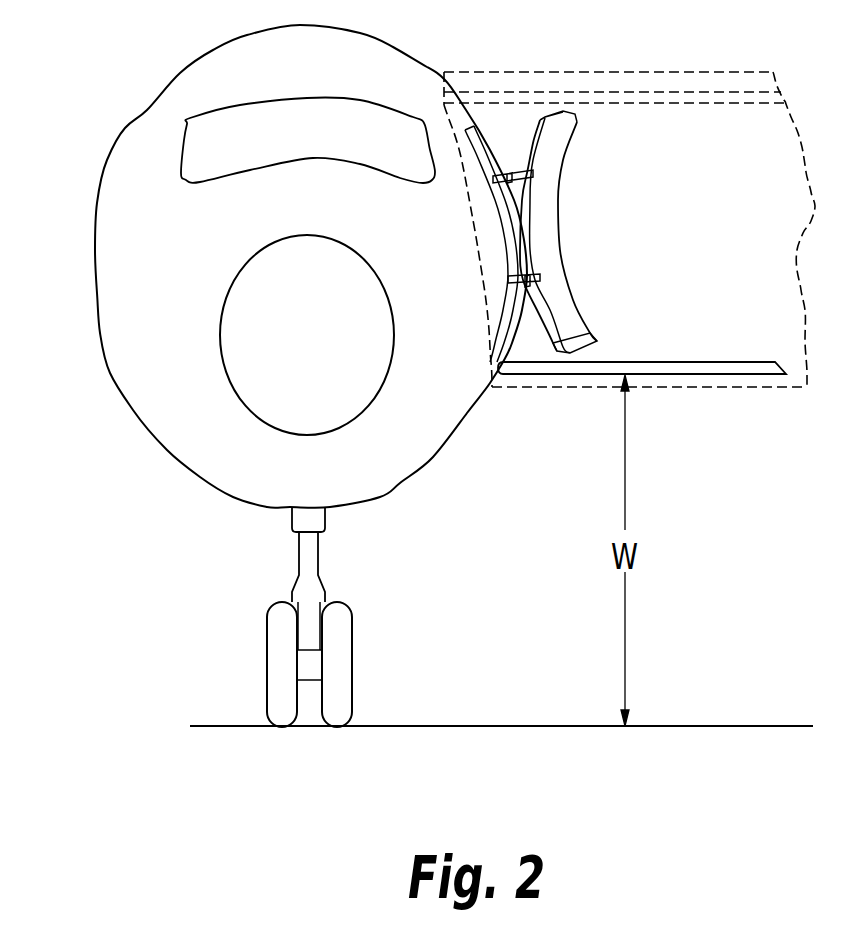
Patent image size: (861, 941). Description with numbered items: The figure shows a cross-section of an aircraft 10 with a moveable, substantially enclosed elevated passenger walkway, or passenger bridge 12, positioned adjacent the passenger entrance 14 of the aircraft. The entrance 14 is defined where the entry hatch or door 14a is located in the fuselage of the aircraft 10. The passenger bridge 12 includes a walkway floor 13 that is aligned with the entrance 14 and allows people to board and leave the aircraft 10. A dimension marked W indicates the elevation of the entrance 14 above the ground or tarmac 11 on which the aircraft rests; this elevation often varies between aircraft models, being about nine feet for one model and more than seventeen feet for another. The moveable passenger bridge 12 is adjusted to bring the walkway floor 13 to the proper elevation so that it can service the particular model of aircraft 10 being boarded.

The aircraft 10 is at (132, 283).
The ground 11 is at (720, 775).
The passenger bridge 12 is at (710, 137).
The walkway floor 13 is at (752, 376).
The passenger entrance 14 is at (497, 382).
The entry hatch/door 14a is at (553, 132).